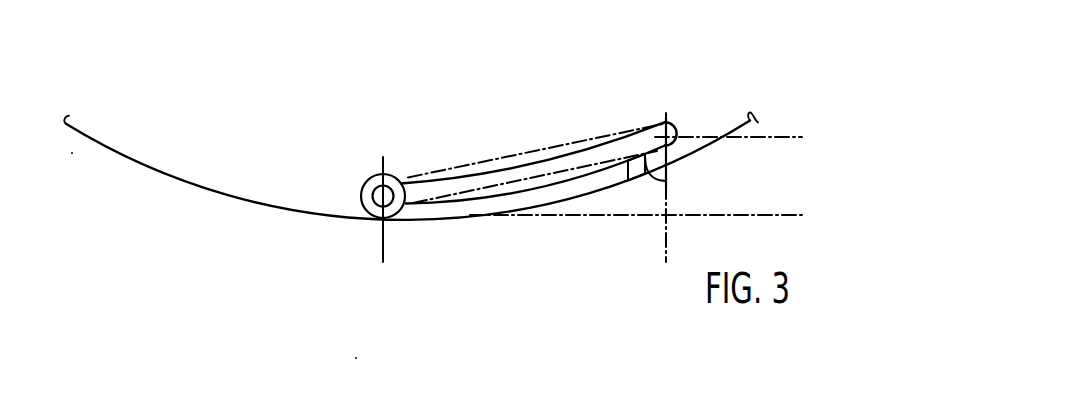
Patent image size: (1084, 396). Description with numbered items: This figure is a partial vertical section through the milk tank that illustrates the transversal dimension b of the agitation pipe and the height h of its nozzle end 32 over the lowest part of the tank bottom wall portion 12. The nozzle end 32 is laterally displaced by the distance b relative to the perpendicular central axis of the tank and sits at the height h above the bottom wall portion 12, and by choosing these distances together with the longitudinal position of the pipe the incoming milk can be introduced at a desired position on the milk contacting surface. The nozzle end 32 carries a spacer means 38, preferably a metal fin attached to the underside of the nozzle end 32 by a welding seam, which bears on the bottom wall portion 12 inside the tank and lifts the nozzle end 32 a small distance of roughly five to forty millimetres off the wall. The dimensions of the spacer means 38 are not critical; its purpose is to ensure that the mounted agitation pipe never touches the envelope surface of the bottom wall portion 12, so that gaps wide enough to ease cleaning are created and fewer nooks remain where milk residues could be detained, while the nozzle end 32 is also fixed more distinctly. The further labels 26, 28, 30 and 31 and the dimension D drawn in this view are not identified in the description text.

The tank bottom wall portion 12 is at (250, 204).
The roller 26 is at (366, 187).
The pivot pin 28 is at (390, 177).
The leaf spring 30 is at (488, 178).
The leaf spring in flattened position 31 is at (554, 148).
The nozzle end 32 is at (673, 125).
The spacer means 38 is at (666, 181).
The diameter of curved surface D is at (205, 181).
The lateral displacement distance b is at (395, 255).
The height of nozzle end h is at (790, 149).